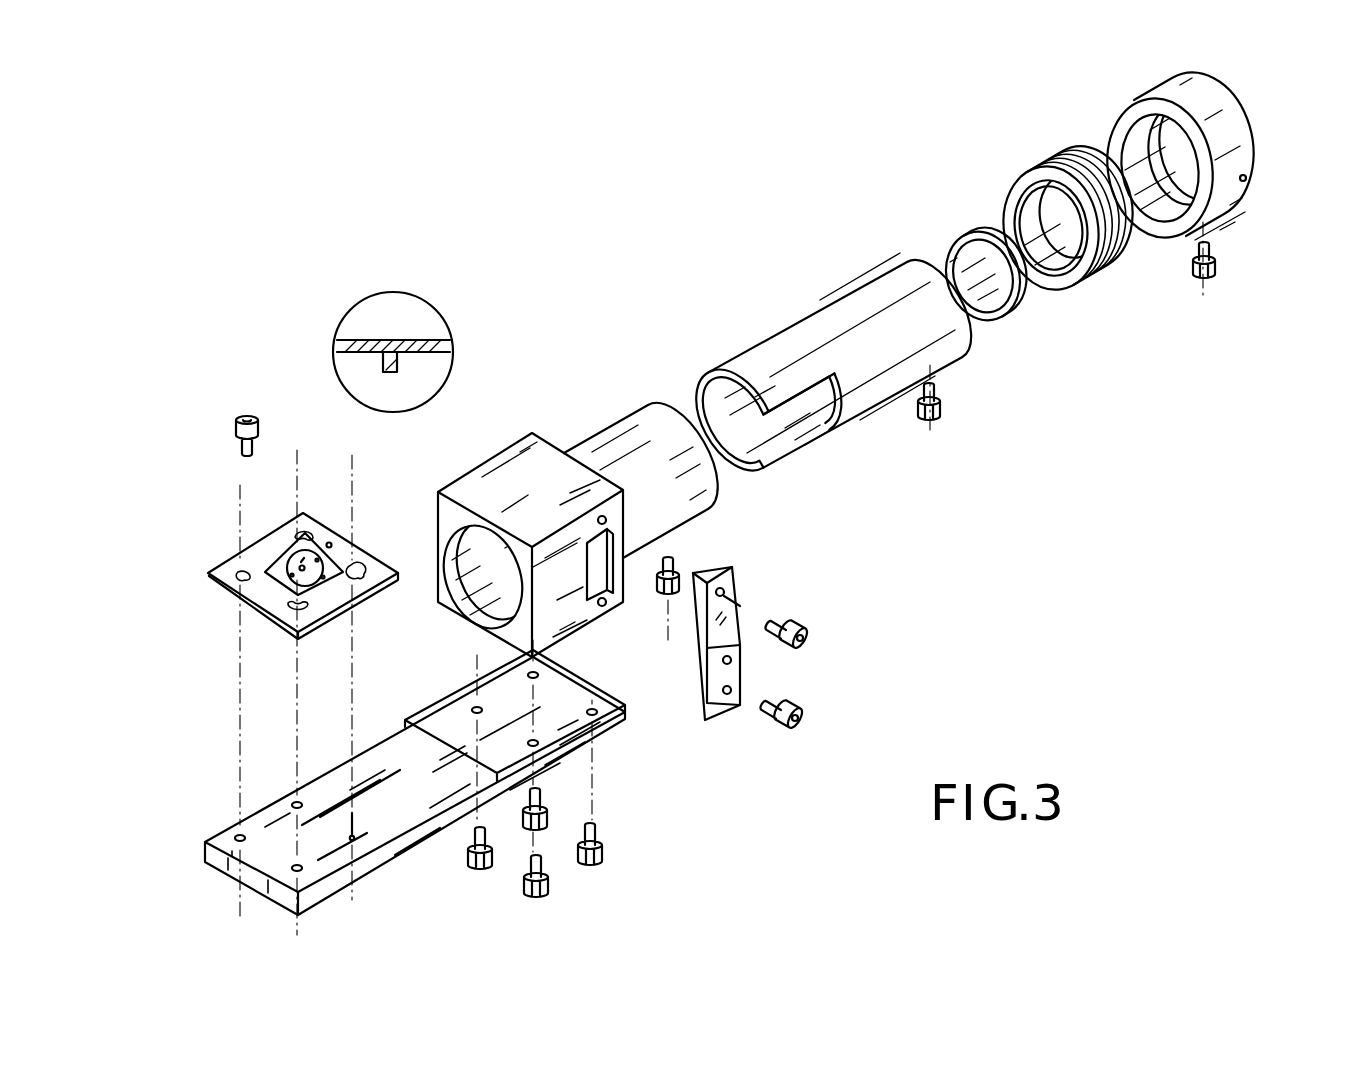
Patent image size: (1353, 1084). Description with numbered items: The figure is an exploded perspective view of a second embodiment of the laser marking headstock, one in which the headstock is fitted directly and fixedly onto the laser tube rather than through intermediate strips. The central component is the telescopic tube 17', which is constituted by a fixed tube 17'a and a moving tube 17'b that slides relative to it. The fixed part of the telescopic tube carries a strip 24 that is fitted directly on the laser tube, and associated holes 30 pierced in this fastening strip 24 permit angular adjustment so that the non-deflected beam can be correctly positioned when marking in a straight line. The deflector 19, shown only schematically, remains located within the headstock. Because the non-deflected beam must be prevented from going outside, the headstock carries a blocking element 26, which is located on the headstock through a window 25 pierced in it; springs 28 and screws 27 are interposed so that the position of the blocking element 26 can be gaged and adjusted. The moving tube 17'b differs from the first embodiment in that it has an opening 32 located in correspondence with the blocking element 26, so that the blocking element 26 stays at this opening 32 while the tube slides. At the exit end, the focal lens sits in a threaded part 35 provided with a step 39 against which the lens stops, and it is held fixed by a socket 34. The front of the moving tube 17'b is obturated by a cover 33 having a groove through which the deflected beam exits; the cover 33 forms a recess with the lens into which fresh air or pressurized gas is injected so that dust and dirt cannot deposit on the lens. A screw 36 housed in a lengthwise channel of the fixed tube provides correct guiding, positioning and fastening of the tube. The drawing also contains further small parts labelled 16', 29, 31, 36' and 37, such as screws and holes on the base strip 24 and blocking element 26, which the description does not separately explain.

The mounting holes 16' is at (818, 676).
The telescopic tube 17' is at (761, 354).
The fixed tube 17'a is at (635, 444).
The moving tube 17'b is at (833, 344).
The deflector 19 is at (318, 585).
The strip 24 is at (355, 788).
The window 25 is at (617, 612).
The blocking element 26 is at (727, 618).
The screws 27 is at (792, 735).
The springs 28 is at (268, 600).
The holes 29 is at (240, 835).
The holes 30 is at (358, 572).
The pin 31 is at (393, 343).
The opening 32 is at (330, 545).
The cover 33 is at (247, 572).
The socket 34 is at (958, 233).
The threaded part 35 is at (243, 422).
The screw 36 is at (385, 893).
The screw 36' is at (798, 488).
The groove 37 is at (395, 855).
The step 39 is at (1065, 287).